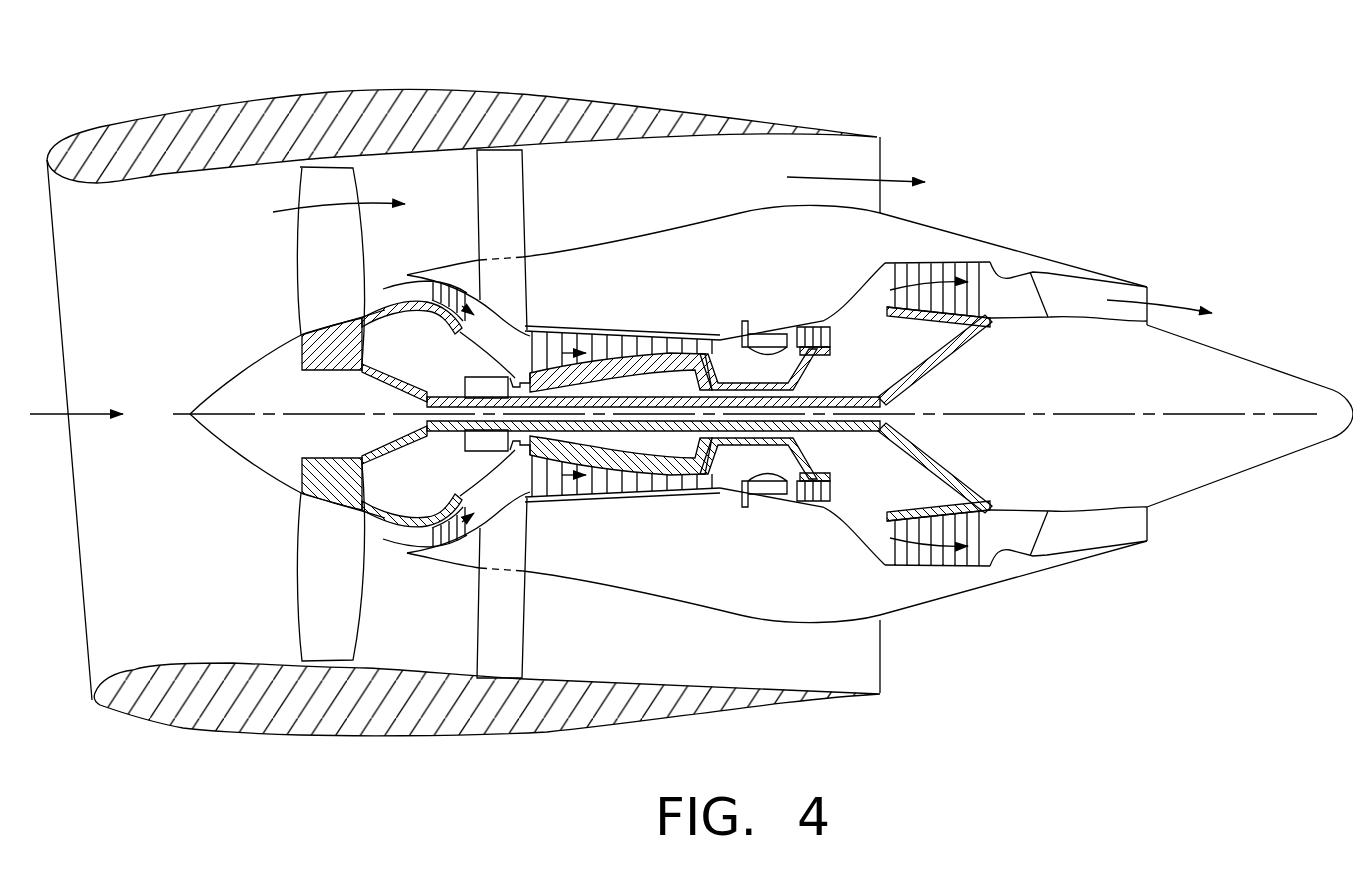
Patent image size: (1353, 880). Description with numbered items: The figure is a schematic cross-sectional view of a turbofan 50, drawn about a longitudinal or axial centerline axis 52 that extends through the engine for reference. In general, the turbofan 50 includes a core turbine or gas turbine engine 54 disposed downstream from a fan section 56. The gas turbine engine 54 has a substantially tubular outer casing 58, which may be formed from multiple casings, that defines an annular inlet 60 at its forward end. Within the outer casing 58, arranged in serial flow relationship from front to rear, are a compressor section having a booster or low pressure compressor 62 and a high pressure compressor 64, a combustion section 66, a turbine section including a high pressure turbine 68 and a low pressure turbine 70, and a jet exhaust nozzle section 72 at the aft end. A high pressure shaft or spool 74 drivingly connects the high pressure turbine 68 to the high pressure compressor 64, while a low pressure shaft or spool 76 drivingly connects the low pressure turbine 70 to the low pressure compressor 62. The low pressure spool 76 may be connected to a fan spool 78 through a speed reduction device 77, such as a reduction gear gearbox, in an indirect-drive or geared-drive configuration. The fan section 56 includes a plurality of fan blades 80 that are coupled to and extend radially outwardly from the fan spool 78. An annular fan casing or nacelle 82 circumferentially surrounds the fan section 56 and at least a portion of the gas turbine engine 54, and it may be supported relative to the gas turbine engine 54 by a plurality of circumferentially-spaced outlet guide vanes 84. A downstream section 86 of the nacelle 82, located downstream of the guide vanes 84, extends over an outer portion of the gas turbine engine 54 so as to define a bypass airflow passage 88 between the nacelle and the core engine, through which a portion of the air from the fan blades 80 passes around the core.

The turbofan 50 is at (1055, 122).
The longitudinal or axial centerline axis 52 is at (1082, 410).
The core turbine or gas turbine engine 54 is at (719, 283).
The fan section 56 is at (354, 78).
The outer casing 58 is at (713, 610).
The annular inlet 60 is at (410, 540).
The booster or low pressure (LP) compressor 62 is at (476, 500).
The high pressure (HP) compressor 64 is at (560, 482).
The combustion section 66 is at (737, 485).
The high pressure (HP) turbine 68 is at (834, 484).
The low pressure (LP) turbine 70 is at (985, 578).
The jet exhaust nozzle section 72 is at (1149, 287).
The high pressure (HP) shaft or spool 74 is at (790, 370).
The low pressure (LP) shaft or spool 76 is at (481, 380).
The speed reduction device 77 is at (473, 347).
The fan spool 78 is at (360, 372).
The fan blades 80 is at (297, 593).
The annular fan casing or nacelle 82 is at (350, 733).
The outlet guide vanes 84 is at (522, 197).
The downstream section of the nacelle 86 is at (770, 113).
The bypass airflow passage 88 is at (685, 193).